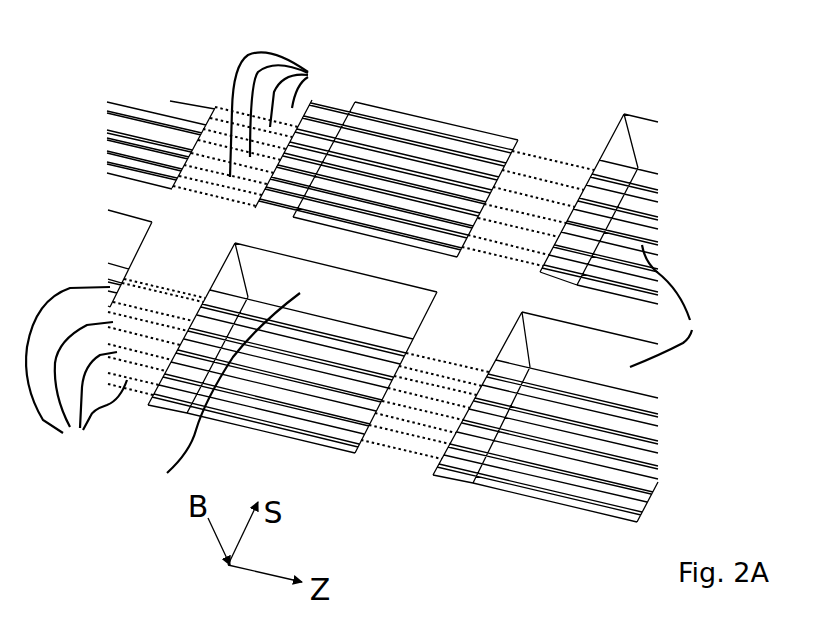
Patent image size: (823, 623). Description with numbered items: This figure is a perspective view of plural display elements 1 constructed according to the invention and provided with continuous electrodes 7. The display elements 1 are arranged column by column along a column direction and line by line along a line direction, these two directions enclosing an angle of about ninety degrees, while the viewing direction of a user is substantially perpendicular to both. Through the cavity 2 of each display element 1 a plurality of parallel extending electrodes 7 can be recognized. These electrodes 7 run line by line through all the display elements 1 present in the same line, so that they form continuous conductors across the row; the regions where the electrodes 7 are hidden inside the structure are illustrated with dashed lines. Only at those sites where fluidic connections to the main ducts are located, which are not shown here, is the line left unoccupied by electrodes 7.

The display element 1 is at (472, 98).
The cavity 2 is at (427, 377).
The continuous electrode 7 is at (178, 259).